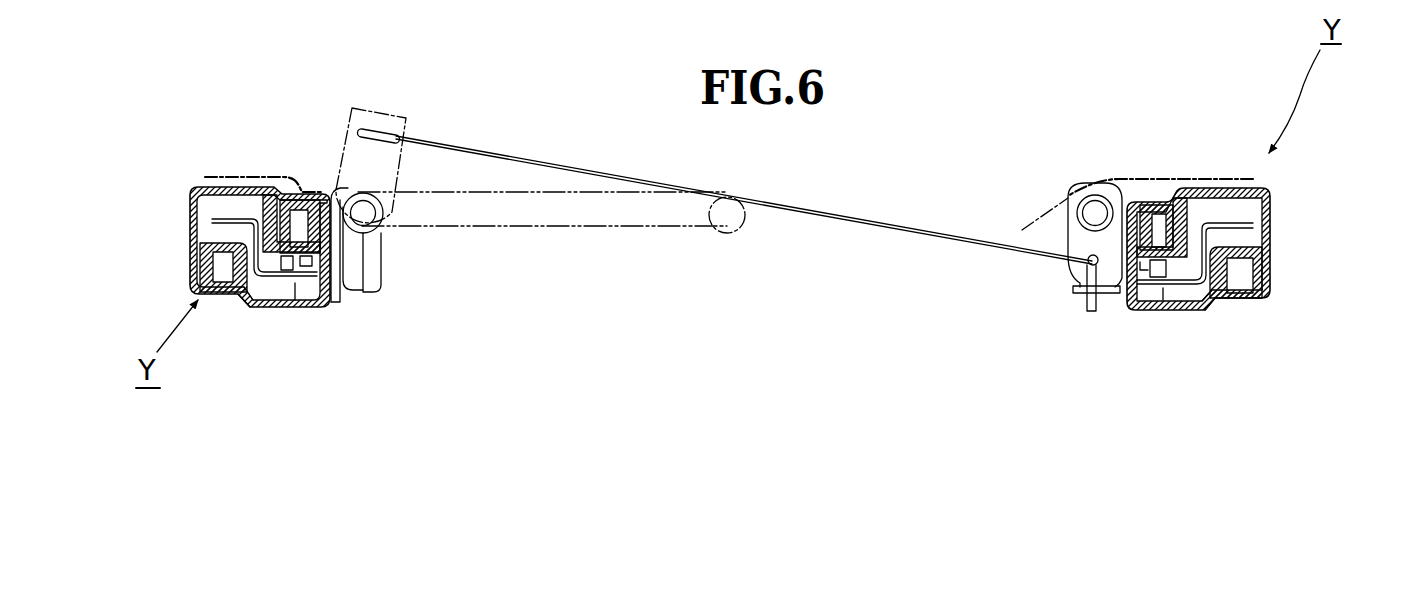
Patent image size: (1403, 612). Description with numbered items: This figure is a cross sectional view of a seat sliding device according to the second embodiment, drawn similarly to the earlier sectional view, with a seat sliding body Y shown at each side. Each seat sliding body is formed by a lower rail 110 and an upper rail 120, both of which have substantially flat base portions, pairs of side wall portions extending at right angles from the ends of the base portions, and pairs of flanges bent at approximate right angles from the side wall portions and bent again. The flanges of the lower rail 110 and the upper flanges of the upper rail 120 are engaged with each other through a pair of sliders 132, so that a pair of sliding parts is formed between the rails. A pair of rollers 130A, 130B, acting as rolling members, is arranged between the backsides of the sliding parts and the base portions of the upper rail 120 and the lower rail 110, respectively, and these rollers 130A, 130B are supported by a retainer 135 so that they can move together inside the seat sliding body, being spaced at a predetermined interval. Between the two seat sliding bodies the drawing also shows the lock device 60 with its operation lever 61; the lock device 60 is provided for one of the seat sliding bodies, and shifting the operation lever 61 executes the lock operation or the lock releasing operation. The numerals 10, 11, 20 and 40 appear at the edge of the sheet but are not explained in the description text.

The vehicle body 10 is at (850, 16).
The roof panel 11 is at (965, 14).
The sunroof opening 20 is at (677, 7).
The lid panel 40 is at (724, 7).
The lock device 60 is at (411, 106).
The operation lever 61 is at (565, 232).
The lower rail 110 is at (263, 311).
The upper rail 120 is at (256, 182).
The roller 130A is at (293, 300).
The roller 130B is at (223, 200).
The slider 132 is at (300, 207).
The retainer 135 is at (246, 306).